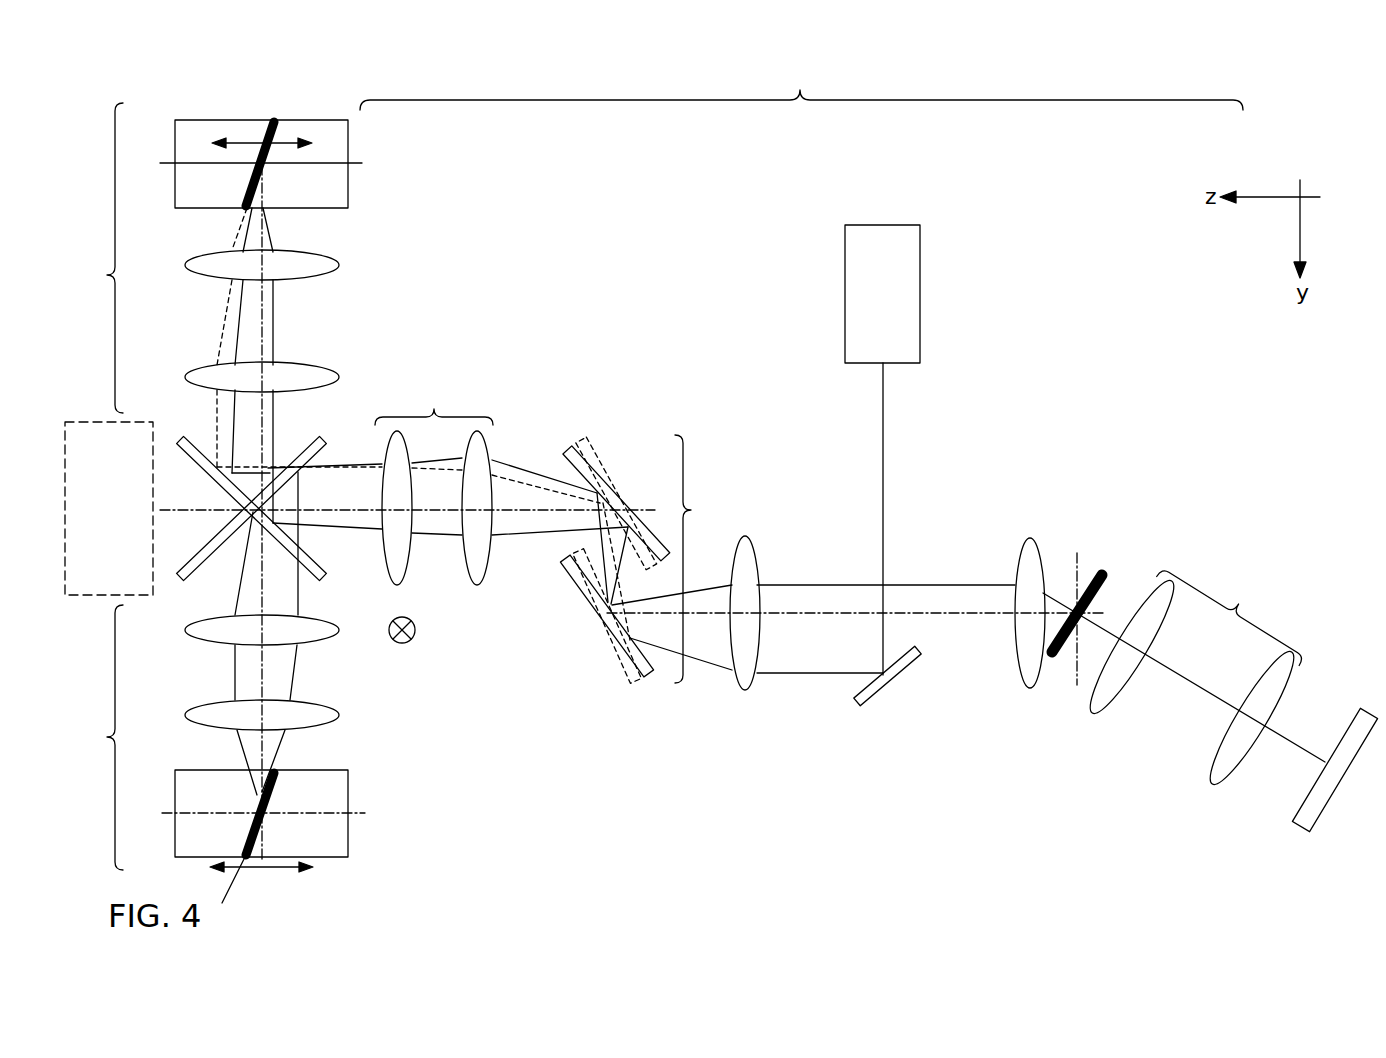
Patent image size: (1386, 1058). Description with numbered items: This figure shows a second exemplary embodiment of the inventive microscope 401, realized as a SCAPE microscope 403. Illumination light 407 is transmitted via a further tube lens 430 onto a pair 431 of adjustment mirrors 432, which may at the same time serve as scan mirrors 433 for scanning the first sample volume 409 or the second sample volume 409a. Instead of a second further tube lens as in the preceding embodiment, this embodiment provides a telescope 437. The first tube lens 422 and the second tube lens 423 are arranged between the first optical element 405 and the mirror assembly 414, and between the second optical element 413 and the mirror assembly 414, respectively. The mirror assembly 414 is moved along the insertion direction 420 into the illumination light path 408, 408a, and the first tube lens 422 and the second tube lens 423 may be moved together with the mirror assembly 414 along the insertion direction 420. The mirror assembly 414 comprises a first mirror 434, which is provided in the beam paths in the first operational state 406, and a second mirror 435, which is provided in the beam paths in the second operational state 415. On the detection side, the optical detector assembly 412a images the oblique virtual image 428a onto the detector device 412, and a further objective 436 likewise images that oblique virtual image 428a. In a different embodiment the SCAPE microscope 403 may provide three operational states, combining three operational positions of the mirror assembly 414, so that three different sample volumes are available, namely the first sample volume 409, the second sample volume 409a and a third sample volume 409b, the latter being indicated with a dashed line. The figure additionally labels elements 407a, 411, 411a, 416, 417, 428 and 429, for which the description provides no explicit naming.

The microscope 401 is at (515, 46).
The SCAPE microscope 403 is at (569, 67).
The first optical element 405 is at (187, 268).
The first operational state 406 is at (94, 258).
The illumination light 407 is at (883, 430).
The light source unit 407a is at (920, 268).
The illumination light path 408 is at (839, 694).
The illumination light path 408a is at (807, 675).
The first sample volume 409 is at (175, 141).
The second sample volume 409a is at (175, 780).
The third sample volume 409b is at (86, 422).
The light beam 411 is at (886, 552).
The illumination beam 411a is at (968, 585).
The detector device 412 is at (1295, 825).
The optical detector assembly 412a is at (1194, 676).
The second optical element 413 is at (187, 715).
The mirror assembly 414 is at (199, 508).
The second operational state 415 is at (94, 737).
The splitter surface 416 is at (202, 470).
The splitter surface 417 is at (202, 547).
The insertion direction 420 is at (416, 630).
The first tube lens 422 is at (187, 380).
The second tube lens 423 is at (187, 630).
The scanning mirror 428 is at (258, 182).
The oblique virtual image 428a is at (1058, 652).
The optical unit 429 is at (801, 85).
The further tube lens 430 is at (741, 690).
The pair of adjustment mirrors 431 is at (707, 559).
The adjustment mirror 432 is at (601, 565).
The scan mirror 433 is at (566, 448).
The first mirror 434 is at (199, 508).
The second mirror 435 is at (199, 508).
The further objective 436 is at (1030, 538).
The telescope 437 is at (434, 482).